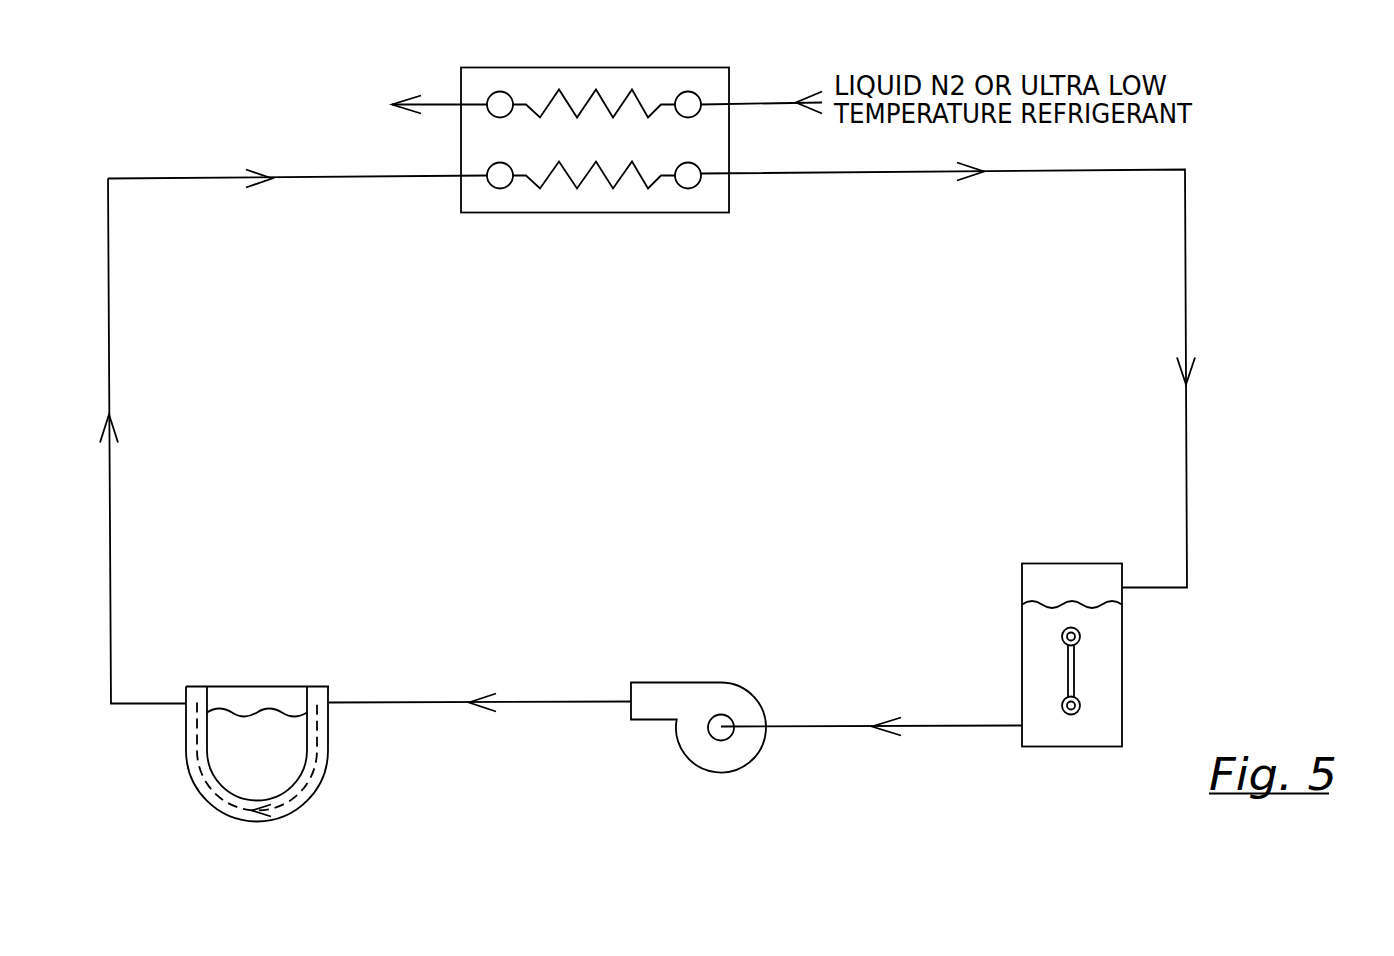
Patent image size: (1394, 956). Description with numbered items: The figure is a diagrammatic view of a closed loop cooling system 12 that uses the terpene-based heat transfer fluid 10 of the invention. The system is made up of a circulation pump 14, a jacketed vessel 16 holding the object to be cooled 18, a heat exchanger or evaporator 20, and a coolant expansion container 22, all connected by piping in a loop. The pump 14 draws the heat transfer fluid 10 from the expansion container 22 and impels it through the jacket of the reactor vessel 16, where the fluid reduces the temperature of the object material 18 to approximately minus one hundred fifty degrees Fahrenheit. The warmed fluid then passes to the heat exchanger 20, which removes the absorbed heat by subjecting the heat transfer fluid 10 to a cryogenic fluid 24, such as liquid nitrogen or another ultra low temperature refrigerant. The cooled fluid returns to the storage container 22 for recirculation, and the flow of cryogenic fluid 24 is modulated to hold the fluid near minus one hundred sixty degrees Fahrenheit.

The heat transfer fluid 10 is at (1114, 677).
The closed loop cooling system 12 is at (1252, 182).
The circulation pump 14 is at (742, 683).
The jacketed vessel 16 is at (325, 778).
The object to be cooled 18 is at (248, 727).
The heat exchanger 20 is at (658, 213).
The coolant expansion container 22 is at (1058, 563).
The cryogenic fluid 24 is at (760, 101).